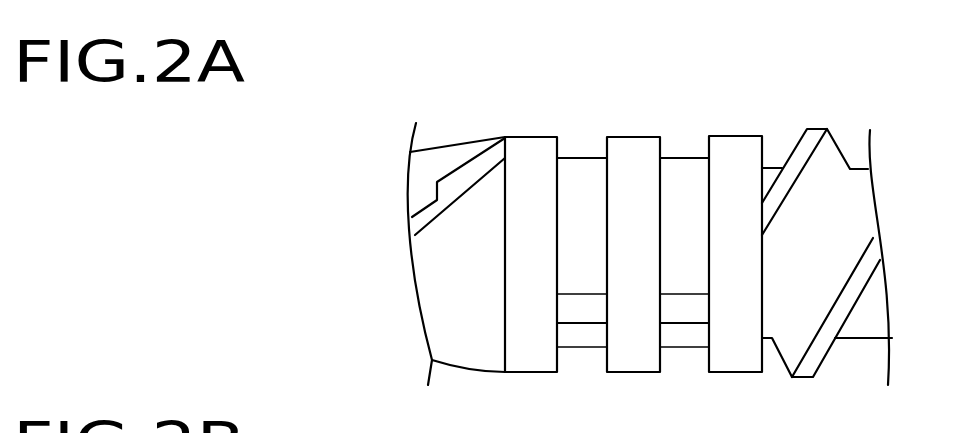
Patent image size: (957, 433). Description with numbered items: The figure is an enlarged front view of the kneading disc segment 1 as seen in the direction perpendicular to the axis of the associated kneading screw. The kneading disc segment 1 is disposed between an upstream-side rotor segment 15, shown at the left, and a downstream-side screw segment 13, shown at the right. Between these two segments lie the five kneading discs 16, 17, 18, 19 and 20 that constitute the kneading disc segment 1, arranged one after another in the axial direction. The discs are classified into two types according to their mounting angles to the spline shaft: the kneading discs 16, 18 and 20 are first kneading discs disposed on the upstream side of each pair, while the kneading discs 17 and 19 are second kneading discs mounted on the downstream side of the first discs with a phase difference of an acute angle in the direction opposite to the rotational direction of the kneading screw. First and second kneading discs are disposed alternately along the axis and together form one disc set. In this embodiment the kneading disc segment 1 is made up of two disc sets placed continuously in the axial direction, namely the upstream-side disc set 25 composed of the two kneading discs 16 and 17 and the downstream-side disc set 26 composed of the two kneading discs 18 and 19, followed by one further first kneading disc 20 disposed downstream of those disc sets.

The kneading disc segment 1 is at (737, 383).
The downstream-side screw segment 13 is at (825, 190).
The upstream-side rotor segment 15 is at (452, 152).
The kneading disc 16 is at (522, 162).
The kneading disc 17 is at (570, 182).
The kneading disc 18 is at (648, 164).
The kneading disc 19 is at (697, 182).
The kneading disc 20 is at (733, 148).
The upstream-side disc set 25 is at (597, 77).
The downstream-side disc set 26 is at (722, 77).